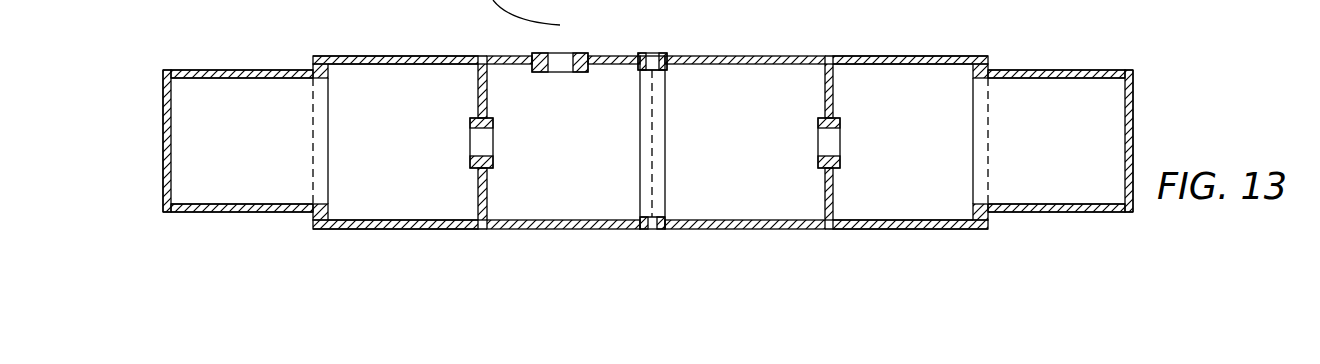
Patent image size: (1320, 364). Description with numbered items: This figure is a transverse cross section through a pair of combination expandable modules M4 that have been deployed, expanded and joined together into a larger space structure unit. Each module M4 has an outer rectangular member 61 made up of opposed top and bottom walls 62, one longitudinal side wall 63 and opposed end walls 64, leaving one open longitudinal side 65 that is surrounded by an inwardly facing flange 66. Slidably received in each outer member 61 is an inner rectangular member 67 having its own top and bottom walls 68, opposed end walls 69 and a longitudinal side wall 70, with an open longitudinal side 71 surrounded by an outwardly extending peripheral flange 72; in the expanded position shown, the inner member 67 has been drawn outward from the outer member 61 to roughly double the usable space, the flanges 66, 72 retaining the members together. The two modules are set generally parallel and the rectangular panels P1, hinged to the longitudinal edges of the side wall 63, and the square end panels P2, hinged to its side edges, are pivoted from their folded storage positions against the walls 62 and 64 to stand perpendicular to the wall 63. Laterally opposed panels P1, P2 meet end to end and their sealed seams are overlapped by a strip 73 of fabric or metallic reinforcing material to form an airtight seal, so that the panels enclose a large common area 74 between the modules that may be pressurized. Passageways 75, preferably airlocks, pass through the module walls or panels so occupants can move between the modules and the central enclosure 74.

The outer rectangular member 61 is at (405, 75).
The top and bottom walls 62 is at (377, 34).
The longitudinal side wall 63 is at (480, 180).
The end walls 64 is at (415, 134).
The open longitudinal side 65 is at (313, 116).
The inwardly facing flange 66 is at (313, 57).
The inner rectangular member 67 is at (214, 49).
The top and bottom walls 68 is at (208, 78).
The end walls 69 is at (256, 155).
The longitudinal side wall 70 is at (163, 136).
The open longitudinal side 71 is at (334, 155).
The peripheral flange 72 is at (330, 210).
The strip 73 is at (665, 65).
The enclosed common area 74 is at (589, 149).
The passageways 75 is at (493, 122).
The combination expandable module M4 is at (459, 52).
The rectangular panels P1 is at (628, 36).
The square end panels P2 is at (614, 203).